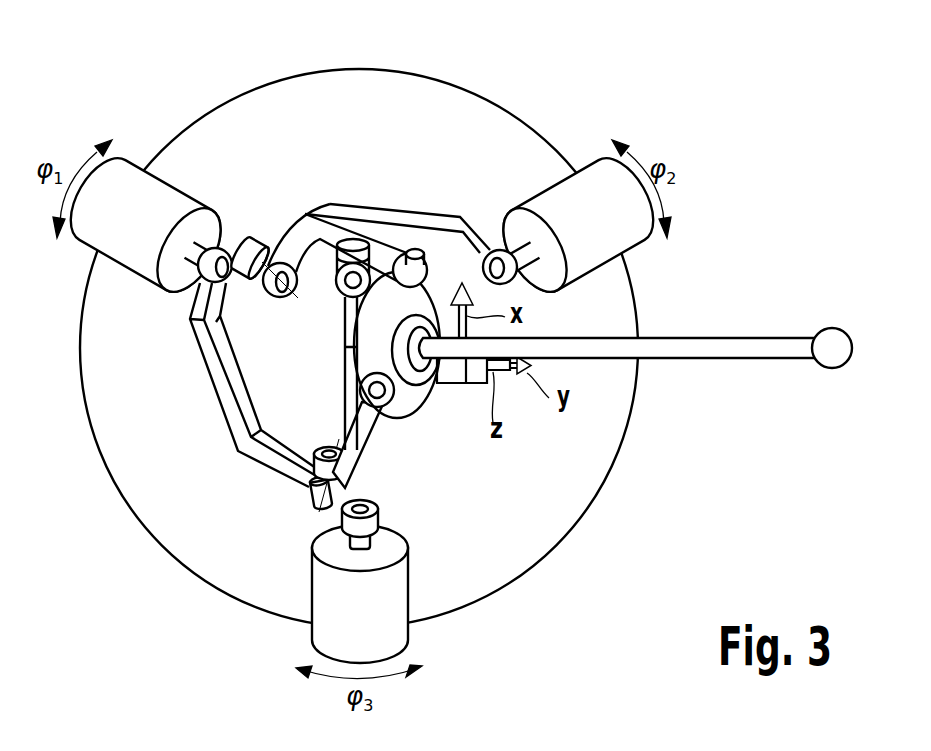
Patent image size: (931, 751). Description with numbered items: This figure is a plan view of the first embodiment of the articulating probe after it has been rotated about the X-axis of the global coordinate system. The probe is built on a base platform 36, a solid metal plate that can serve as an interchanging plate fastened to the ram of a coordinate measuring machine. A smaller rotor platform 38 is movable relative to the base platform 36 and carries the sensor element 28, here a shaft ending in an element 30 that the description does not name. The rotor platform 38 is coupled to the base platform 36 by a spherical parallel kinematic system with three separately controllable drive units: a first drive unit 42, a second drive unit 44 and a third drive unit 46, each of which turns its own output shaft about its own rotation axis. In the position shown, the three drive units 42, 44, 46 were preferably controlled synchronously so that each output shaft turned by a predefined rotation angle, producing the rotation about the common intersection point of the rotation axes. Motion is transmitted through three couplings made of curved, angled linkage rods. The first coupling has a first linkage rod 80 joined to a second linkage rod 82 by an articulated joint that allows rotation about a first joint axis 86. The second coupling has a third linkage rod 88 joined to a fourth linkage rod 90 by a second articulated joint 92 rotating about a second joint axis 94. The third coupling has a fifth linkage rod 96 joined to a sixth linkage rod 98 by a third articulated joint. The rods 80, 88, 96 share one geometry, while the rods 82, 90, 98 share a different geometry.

The sensor element 28 is at (757, 350).
The ball knob 30 is at (828, 352).
The base platform 36 is at (460, 120).
The rotor platform 38 is at (418, 407).
The first drive unit 42 is at (103, 230).
The second drive unit 44 is at (591, 186).
The third drive unit 46 is at (385, 628).
The first linkage rod 80 is at (220, 385).
The second linkage rod 82 is at (360, 462).
The first joint axis 86 is at (313, 507).
The third linkage rod 88 is at (415, 218).
The fourth linkage rod 90 is at (330, 220).
The second articulated joint 92 is at (253, 245).
The second joint axis 94 is at (233, 248).
The fifth linkage rod 96 is at (345, 357).
The sixth linkage rod 98 is at (345, 307).